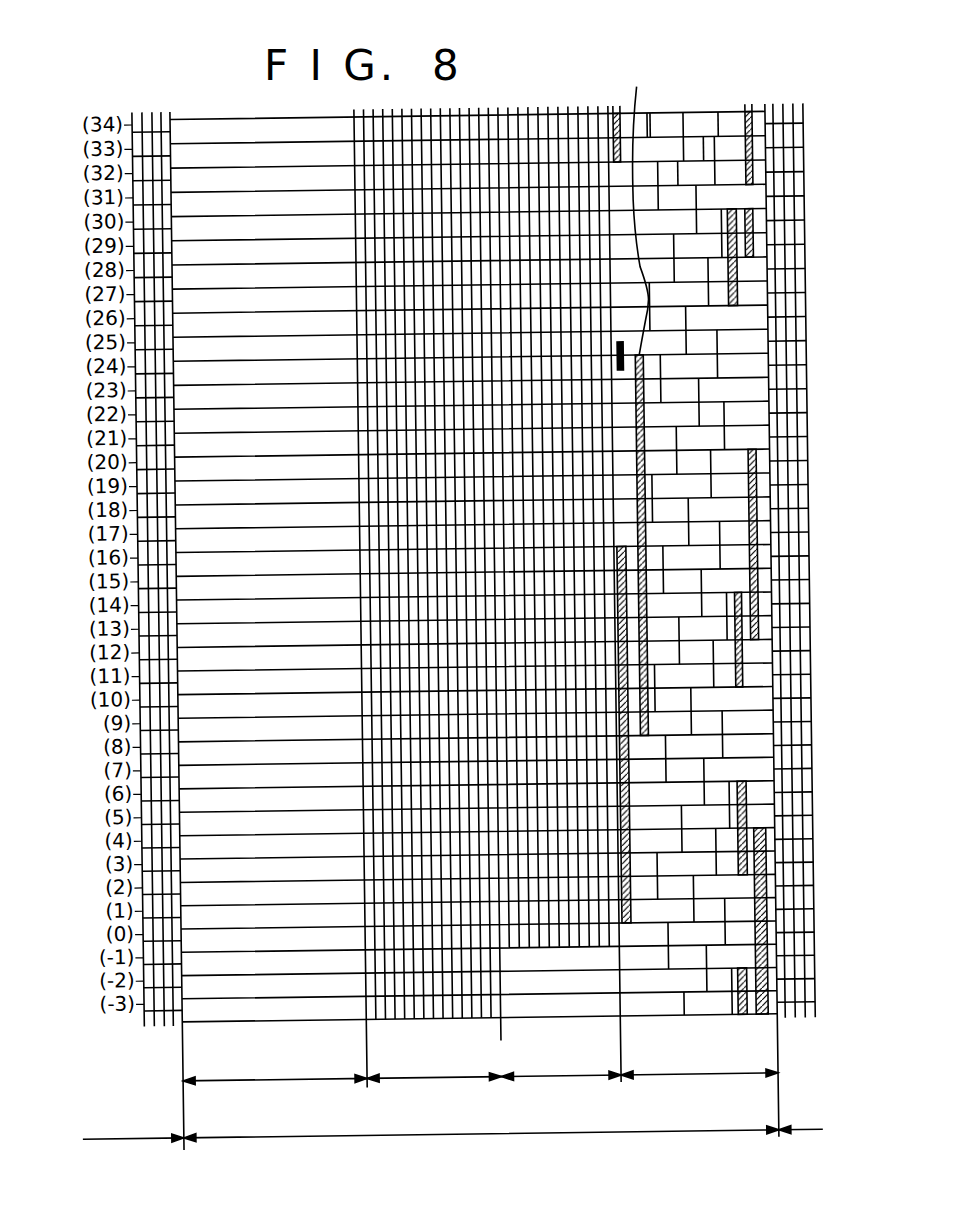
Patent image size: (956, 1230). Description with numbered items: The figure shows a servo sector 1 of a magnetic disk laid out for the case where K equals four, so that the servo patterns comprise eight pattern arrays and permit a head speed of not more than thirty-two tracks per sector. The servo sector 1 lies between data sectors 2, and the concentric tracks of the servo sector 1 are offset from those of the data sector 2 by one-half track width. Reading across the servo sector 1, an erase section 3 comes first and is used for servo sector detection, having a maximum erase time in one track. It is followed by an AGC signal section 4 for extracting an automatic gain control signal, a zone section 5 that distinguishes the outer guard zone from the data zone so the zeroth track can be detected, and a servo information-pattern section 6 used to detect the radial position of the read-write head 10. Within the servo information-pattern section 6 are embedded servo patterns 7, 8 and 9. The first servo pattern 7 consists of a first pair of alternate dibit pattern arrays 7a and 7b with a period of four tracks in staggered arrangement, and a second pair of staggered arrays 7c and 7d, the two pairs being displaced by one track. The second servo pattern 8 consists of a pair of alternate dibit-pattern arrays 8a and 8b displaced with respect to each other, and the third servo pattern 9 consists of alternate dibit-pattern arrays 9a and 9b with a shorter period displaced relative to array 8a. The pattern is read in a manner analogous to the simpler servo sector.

The servo sector 1 is at (504, 1170).
The data sector 2 is at (104, 1136).
The erase section 3 is at (304, 1089).
The AGC signal section 4 is at (402, 1090).
The zone section 5 is at (572, 1092).
The servo information-pattern section 6 is at (722, 1090).
The first servo pattern 7 is at (735, 66).
The alternate dibit pattern array 7a is at (651, 119).
The alternate dibit pattern array 7b is at (677, 180).
The alternate dibit pattern array 7c is at (702, 152).
The alternate dibit pattern array 7d is at (718, 138).
The second servo pattern 8 is at (584, 66).
The alternate dibit-pattern array 8a is at (612, 112).
The alternate dibit-pattern array 8b is at (642, 397).
The third servo pattern 9 is at (779, 45).
The alternate dibit-pattern array 9a is at (735, 112).
The alternate dibit-pattern array 9b is at (750, 112).
The read-write head 10 is at (617, 348).